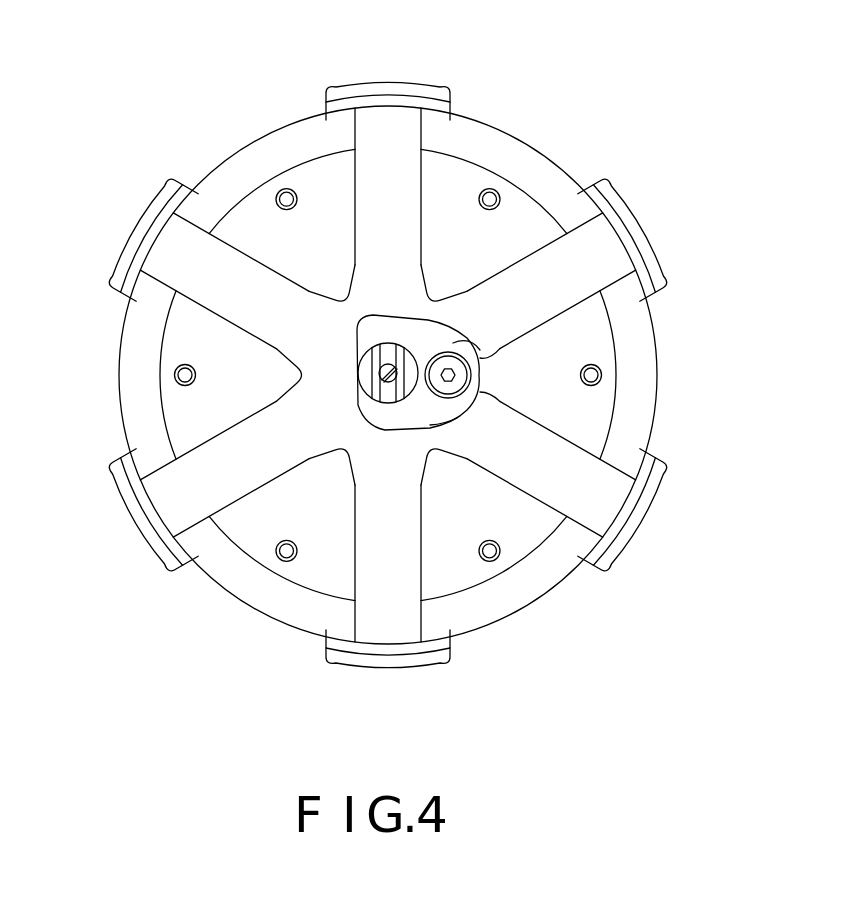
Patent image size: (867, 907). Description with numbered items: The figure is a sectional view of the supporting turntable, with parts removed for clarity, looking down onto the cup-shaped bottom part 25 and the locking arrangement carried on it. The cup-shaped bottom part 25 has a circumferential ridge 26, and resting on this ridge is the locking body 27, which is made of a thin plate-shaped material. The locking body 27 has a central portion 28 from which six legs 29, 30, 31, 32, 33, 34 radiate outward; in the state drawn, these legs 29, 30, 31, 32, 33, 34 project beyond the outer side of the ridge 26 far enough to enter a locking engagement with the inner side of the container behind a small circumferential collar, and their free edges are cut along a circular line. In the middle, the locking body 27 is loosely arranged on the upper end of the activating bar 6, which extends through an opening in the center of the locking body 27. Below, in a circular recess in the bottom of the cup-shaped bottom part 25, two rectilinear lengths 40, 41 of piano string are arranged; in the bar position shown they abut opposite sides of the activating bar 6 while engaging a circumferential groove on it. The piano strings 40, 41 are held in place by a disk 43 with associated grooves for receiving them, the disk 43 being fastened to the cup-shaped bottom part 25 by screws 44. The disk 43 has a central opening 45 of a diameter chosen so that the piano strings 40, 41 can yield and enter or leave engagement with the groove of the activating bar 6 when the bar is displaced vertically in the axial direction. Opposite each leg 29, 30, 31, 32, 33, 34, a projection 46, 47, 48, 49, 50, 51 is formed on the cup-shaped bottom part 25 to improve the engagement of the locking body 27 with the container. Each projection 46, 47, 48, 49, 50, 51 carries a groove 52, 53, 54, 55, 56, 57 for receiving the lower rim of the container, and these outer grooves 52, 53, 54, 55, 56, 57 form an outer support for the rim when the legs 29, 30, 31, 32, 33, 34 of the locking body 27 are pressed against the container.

The activating bar 6 is at (360, 387).
The cup-shaped bottom part 25 is at (528, 217).
The circumferential ridge 26 is at (243, 147).
The locking body 27 is at (413, 185).
The central portion 28 is at (345, 432).
The leg 29 is at (402, 130).
The leg 30 is at (612, 255).
The leg 31 is at (607, 498).
The leg 32 is at (399, 620).
The leg 33 is at (172, 500).
The leg 34 is at (165, 260).
The rectilinear length of piano string 40 is at (360, 352).
The rectilinear length of piano string 41 is at (432, 325).
The disk 43 is at (453, 343).
The screw 44 is at (462, 375).
The central opening 45 is at (430, 425).
The projection 46 is at (355, 87).
The projection 47 is at (618, 207).
The projection 48 is at (655, 488).
The projection 49 is at (353, 662).
The projection 50 is at (130, 478).
The projection 51 is at (140, 228).
The groove 52 is at (391, 94).
The groove 53 is at (617, 222).
The groove 54 is at (613, 555).
The groove 55 is at (330, 652).
The groove 56 is at (162, 560).
The groove 57 is at (167, 198).